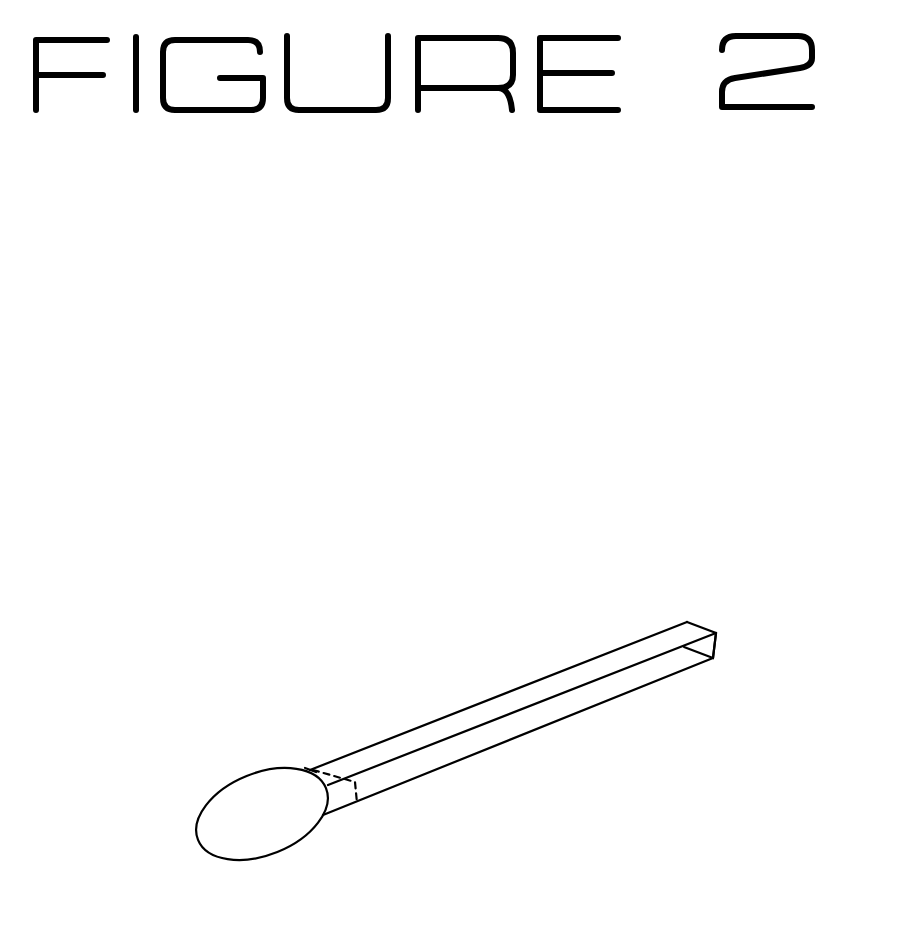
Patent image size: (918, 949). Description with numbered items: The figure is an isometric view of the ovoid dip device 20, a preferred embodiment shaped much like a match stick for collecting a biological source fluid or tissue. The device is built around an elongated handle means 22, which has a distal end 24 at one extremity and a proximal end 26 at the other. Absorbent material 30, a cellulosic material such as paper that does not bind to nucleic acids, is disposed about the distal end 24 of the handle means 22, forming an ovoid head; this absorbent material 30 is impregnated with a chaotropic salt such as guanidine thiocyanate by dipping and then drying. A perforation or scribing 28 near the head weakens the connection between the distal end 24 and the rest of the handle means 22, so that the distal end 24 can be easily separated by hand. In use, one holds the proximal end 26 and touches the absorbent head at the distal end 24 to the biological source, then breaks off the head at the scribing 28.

The ovoid dip device 20 is at (338, 669).
The handle means 22 is at (593, 670).
The distal end 24 is at (716, 643).
The proximal end 26 is at (312, 770).
The scribing 28 is at (355, 782).
The absorbent material 30 is at (257, 823).